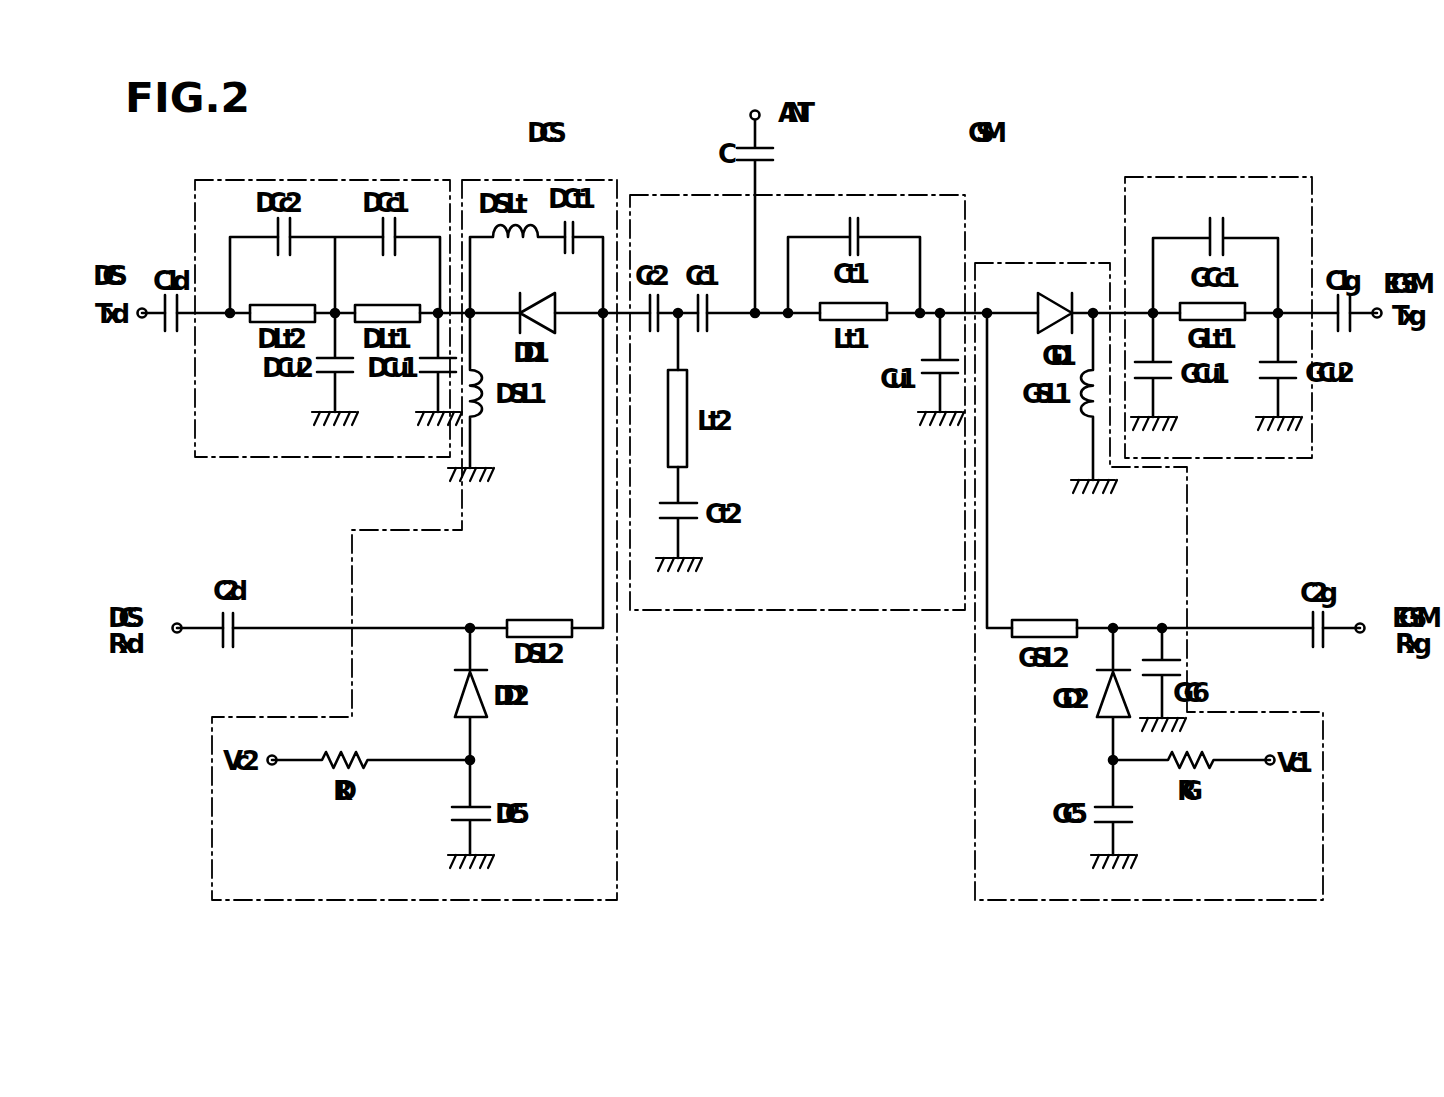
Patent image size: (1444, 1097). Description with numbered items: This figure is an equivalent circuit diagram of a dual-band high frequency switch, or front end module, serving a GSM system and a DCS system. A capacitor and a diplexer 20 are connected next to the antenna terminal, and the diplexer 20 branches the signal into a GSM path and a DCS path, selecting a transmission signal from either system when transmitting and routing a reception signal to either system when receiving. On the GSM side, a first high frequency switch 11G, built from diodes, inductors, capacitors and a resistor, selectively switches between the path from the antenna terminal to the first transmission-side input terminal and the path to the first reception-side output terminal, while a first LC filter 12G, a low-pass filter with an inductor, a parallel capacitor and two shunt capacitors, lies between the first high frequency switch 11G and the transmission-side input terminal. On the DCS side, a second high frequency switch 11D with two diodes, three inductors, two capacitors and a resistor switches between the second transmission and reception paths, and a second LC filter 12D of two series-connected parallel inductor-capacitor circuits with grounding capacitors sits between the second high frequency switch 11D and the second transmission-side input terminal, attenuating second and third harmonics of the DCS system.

The second LC filter 12D is at (357, 178).
The second high frequency switch 11D is at (490, 177).
The diplexer 20 is at (808, 193).
The first high frequency switch 11G is at (1013, 262).
The first LC filter 12G is at (1225, 175).